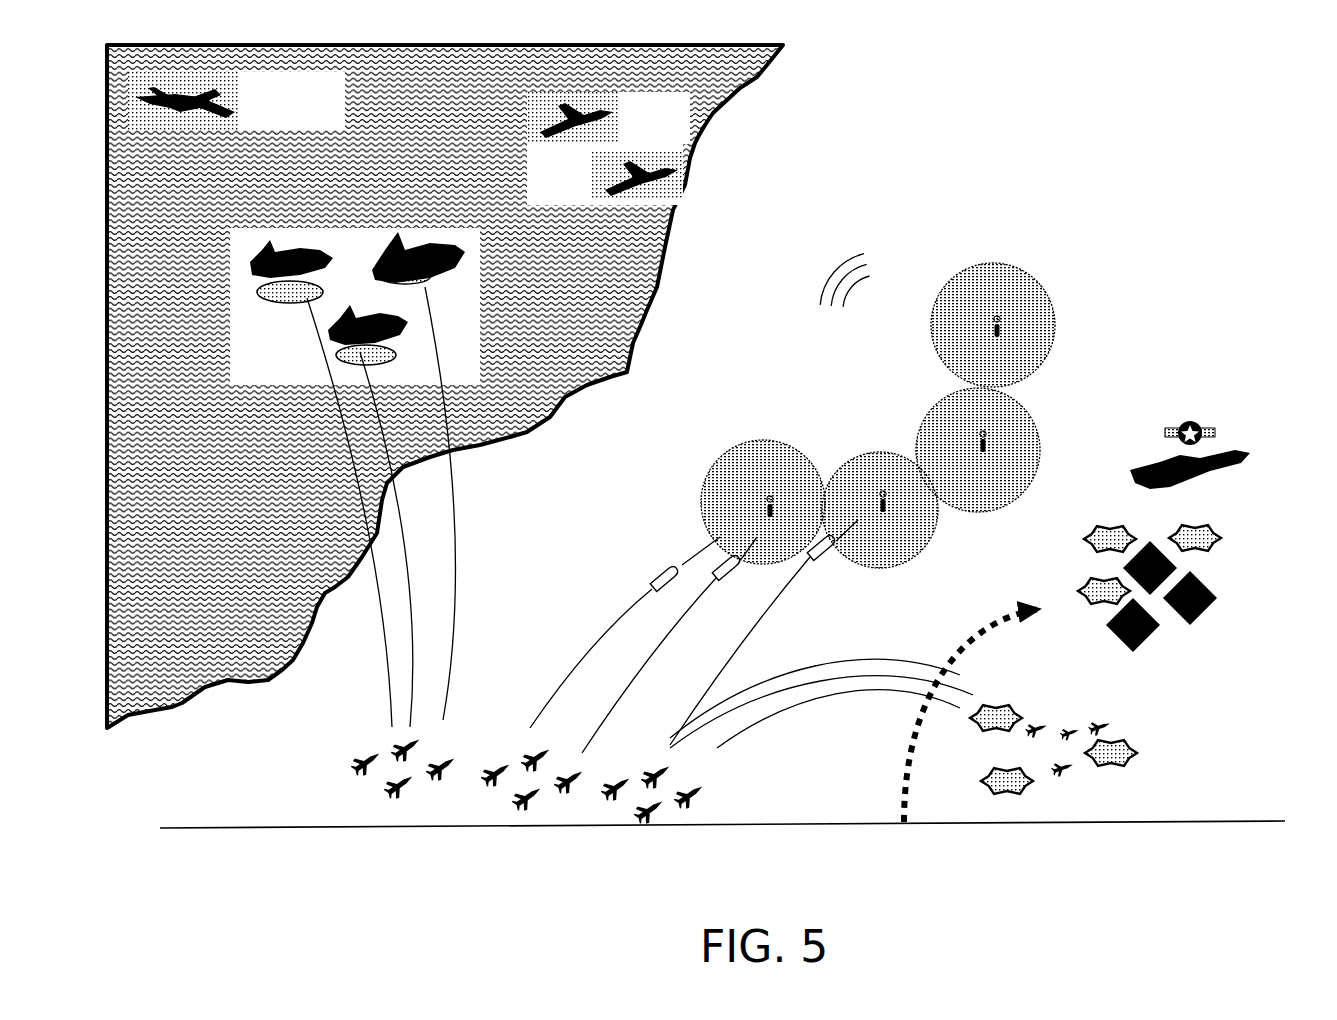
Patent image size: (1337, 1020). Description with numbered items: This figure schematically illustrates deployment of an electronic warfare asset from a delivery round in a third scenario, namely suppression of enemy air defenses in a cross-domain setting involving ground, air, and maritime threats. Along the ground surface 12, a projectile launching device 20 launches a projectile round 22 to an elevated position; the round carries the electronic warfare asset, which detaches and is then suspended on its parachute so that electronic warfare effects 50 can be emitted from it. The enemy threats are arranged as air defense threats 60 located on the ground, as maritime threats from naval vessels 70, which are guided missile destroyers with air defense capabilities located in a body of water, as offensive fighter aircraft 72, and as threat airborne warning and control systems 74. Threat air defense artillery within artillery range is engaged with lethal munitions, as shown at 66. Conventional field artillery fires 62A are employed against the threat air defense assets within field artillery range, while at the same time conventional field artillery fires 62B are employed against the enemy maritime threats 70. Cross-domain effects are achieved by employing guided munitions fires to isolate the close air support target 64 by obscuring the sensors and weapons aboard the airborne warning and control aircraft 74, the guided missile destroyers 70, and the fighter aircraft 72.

The ground surface 12 is at (1152, 818).
The projectile launching device 20 is at (530, 818).
The projectile round 22 is at (812, 541).
The EW effects 50 is at (873, 250).
The air defense threats 60 is at (1158, 716).
The conventional FA fires 62A is at (620, 832).
The conventional FA fires 62B is at (377, 821).
The CAS target 64 is at (1217, 447).
The lethal munitions engagement 66 is at (912, 800).
The naval vessels 70 is at (278, 362).
The offensive fighter aircraft 72 is at (653, 140).
The threat airborne warning and control systems 74 is at (238, 105).